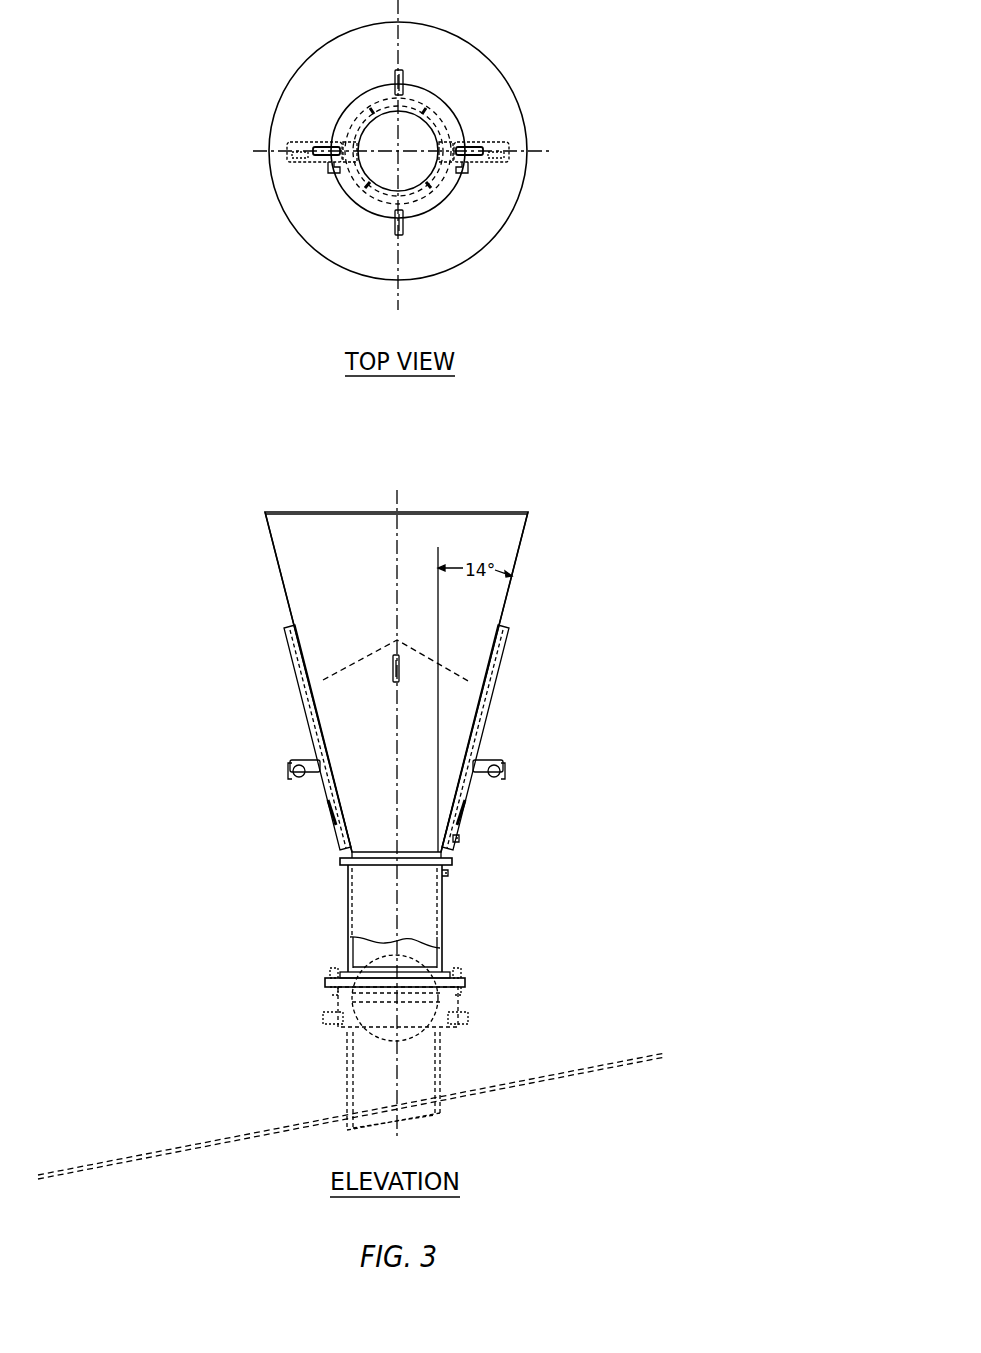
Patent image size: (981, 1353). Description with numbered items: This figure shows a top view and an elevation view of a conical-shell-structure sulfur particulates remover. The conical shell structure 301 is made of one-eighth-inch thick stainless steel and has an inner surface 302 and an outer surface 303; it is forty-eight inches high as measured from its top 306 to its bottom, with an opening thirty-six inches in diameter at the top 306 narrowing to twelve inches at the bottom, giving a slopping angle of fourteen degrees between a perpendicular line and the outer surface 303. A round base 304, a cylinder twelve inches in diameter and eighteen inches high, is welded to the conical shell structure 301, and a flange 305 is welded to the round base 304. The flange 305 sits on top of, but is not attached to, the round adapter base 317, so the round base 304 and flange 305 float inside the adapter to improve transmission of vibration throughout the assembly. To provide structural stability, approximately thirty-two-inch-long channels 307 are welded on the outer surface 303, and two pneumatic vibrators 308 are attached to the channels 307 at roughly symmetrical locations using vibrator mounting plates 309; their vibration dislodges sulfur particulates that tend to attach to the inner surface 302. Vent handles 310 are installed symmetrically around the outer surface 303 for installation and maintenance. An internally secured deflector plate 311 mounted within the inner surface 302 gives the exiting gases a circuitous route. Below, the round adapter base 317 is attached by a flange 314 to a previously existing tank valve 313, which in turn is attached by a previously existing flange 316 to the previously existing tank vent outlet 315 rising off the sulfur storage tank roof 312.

The conical shell structure 301 is at (265, 512).
The inner surface 302 is at (283, 577).
The outer surface 303 is at (268, 532).
The round base 304 is at (440, 927).
The flange 305 is at (337, 857).
The top 306 is at (457, 512).
The channels 307 is at (297, 673).
The pneumatic vibrators 308 is at (293, 768).
The vibrator mounting plates 309 is at (307, 762).
The vent handles 310 is at (398, 678).
The deflector plate 311 is at (462, 675).
The sulfur storage tank roof 312 is at (175, 1145).
The tank valve 313 is at (410, 1002).
The flange 314 is at (328, 978).
The tank vent outlet 315 is at (442, 1085).
The flange 316 is at (340, 1017).
The round adapter base 317 is at (382, 938).